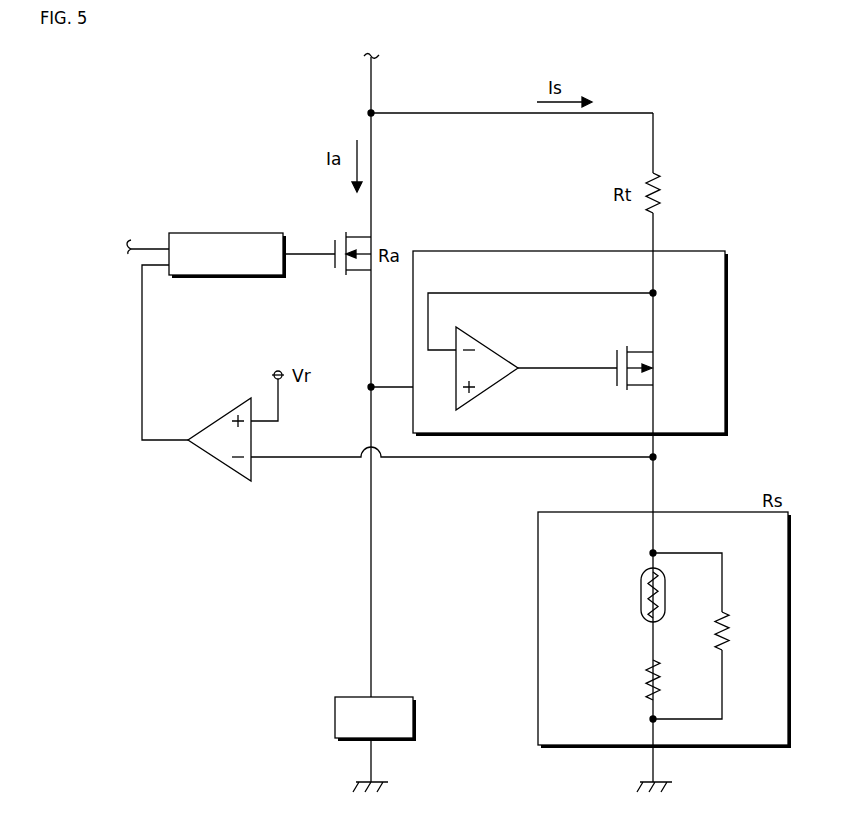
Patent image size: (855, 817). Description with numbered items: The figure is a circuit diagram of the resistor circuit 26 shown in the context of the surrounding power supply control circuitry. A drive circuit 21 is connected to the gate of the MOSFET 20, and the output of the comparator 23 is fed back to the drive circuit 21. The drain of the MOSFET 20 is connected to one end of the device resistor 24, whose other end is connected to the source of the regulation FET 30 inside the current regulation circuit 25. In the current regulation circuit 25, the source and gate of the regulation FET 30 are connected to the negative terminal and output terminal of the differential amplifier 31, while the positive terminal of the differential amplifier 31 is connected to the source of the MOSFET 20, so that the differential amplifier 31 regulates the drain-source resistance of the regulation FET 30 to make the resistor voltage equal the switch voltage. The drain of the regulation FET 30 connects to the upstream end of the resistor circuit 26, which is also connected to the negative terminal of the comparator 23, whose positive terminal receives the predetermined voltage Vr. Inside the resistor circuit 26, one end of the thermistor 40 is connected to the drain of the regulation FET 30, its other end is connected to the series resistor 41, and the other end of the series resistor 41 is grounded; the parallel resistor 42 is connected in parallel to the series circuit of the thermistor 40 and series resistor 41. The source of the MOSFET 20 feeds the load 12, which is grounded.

The load 12 is at (398, 697).
The MOSFET 20 is at (350, 279).
The drive circuit 21 is at (238, 233).
The comparator 23 is at (215, 413).
The device resistor 24 is at (664, 196).
The current regulation circuit 25 is at (433, 251).
The resistor circuit 26 is at (575, 512).
The regulation FET 30 is at (657, 360).
The differential amplifier 31 is at (487, 340).
The thermistor 40 is at (641, 598).
The series resistor 41 is at (645, 692).
The parallel resistor 42 is at (730, 625).